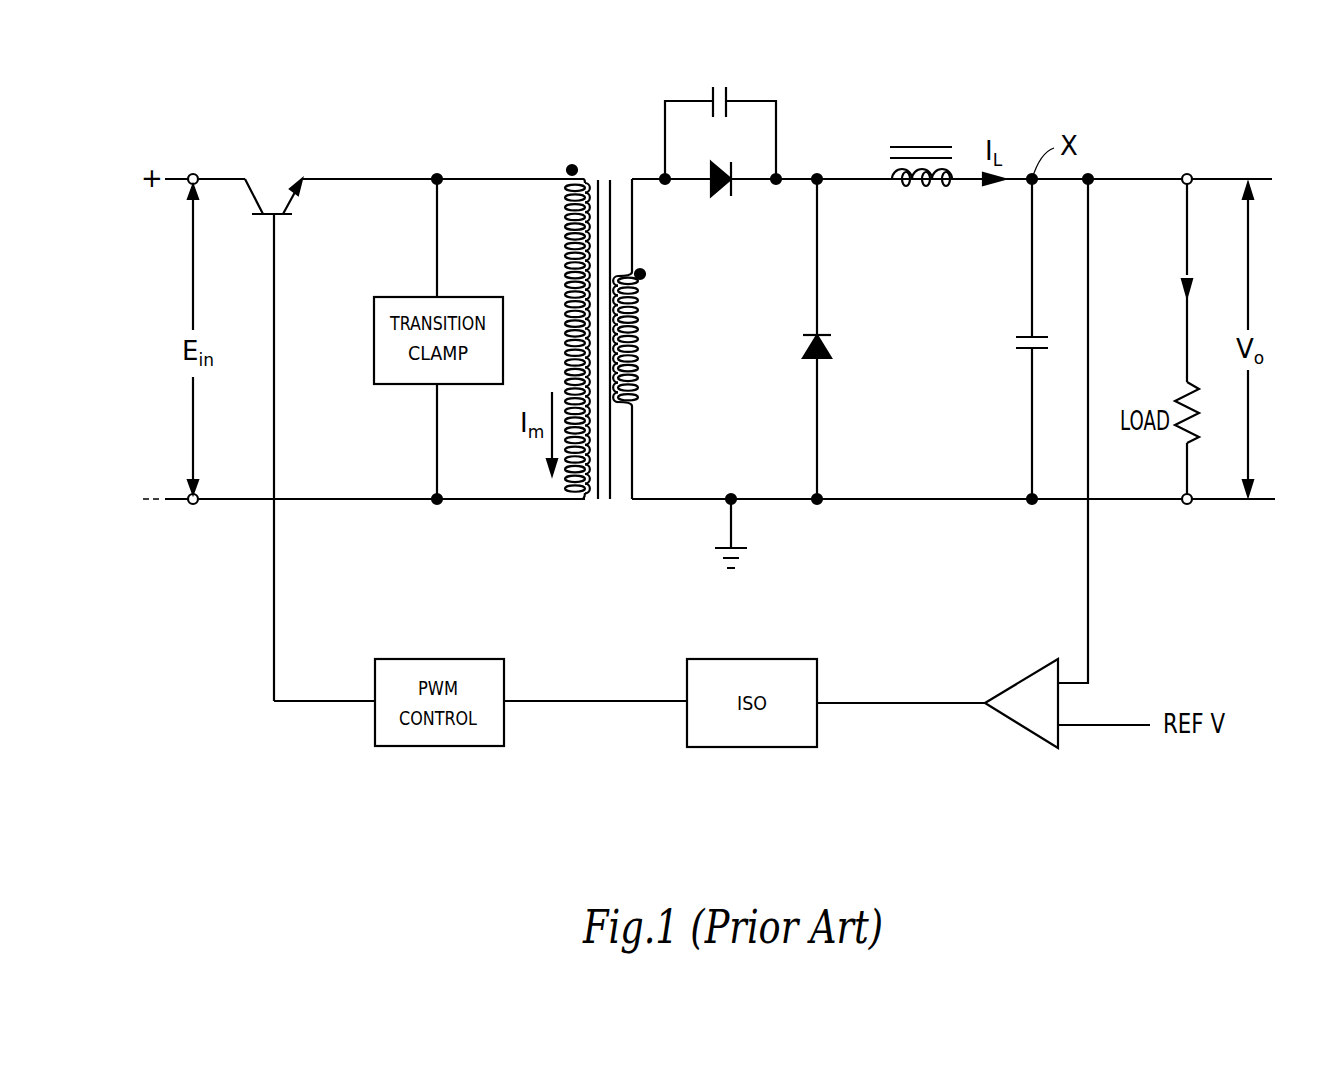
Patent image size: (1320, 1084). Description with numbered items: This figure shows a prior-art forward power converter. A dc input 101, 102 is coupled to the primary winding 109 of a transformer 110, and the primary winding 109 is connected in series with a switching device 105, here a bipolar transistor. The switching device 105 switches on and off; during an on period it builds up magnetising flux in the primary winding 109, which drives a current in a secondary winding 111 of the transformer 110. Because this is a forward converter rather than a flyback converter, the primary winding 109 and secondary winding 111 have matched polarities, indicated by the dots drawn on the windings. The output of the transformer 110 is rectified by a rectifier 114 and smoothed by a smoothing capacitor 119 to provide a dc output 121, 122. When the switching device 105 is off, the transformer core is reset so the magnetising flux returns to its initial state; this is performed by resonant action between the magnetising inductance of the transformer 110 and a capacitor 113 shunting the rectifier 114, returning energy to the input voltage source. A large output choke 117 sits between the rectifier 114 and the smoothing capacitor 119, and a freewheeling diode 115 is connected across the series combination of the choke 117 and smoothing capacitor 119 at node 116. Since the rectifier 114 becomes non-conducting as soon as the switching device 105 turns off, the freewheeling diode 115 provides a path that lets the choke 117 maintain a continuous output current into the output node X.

The dc input 101 is at (193, 172).
The dc input 102 is at (193, 506).
The switching device 105 is at (291, 218).
The primary winding 109 is at (559, 218).
The transformer 110 is at (603, 176).
The secondary winding 111 is at (644, 300).
The capacitor 113 is at (716, 82).
The rectifier 114 is at (718, 198).
The freewheeling diode 115 is at (802, 348).
The node 116 is at (817, 170).
The output choke 117 is at (920, 139).
The smoothing capacitor 119 is at (1011, 338).
The dc output 121 is at (1187, 172).
The dc output 122 is at (1187, 506).